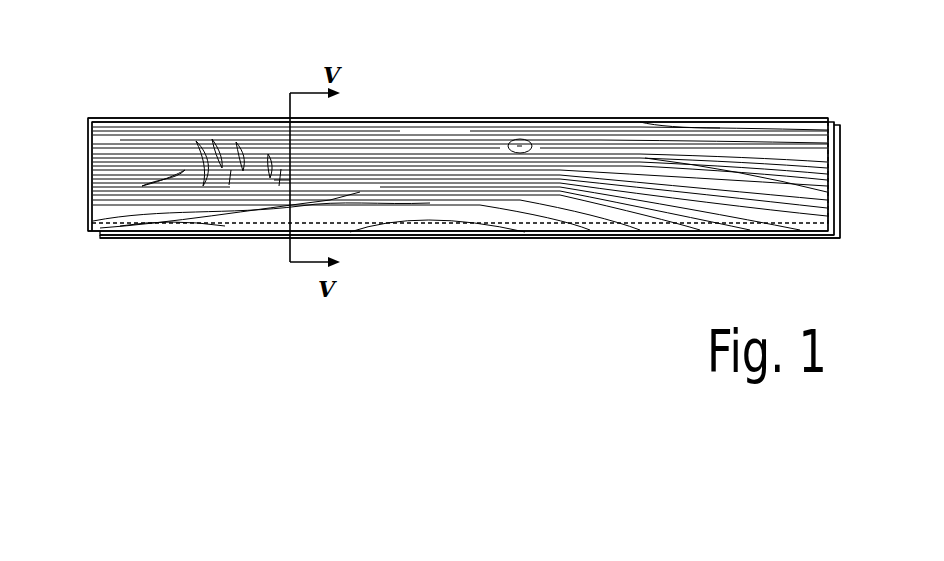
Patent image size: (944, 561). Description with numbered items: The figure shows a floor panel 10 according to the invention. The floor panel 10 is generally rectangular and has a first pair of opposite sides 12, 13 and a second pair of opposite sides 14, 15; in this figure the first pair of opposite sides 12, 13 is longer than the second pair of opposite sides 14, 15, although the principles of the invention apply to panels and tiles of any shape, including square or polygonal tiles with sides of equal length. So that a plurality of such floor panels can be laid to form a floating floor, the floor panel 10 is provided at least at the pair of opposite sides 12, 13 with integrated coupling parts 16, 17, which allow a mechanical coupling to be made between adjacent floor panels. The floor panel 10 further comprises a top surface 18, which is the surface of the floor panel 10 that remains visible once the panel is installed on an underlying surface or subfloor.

The floor panel 10 is at (178, 250).
The first side of first pair of opposite sides 12 is at (428, 113).
The second side of first pair of opposite sides 13 is at (421, 246).
The first side of second pair of opposite sides 14 is at (80, 225).
The second side of second pair of opposite sides 15 is at (849, 234).
The coupling part 16 is at (618, 118).
The coupling part 17 is at (557, 237).
The top surface 18 is at (738, 163).